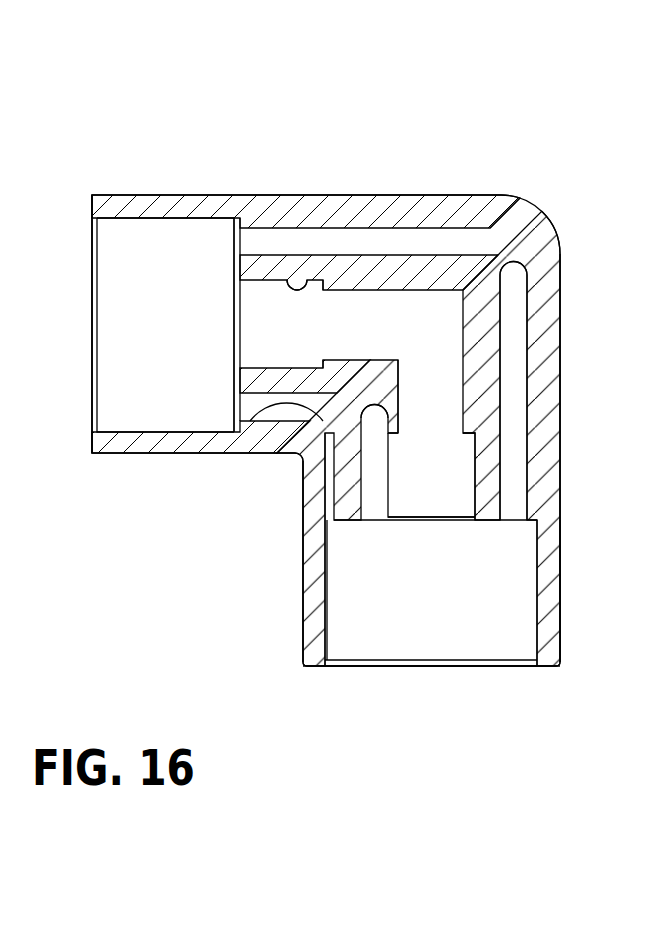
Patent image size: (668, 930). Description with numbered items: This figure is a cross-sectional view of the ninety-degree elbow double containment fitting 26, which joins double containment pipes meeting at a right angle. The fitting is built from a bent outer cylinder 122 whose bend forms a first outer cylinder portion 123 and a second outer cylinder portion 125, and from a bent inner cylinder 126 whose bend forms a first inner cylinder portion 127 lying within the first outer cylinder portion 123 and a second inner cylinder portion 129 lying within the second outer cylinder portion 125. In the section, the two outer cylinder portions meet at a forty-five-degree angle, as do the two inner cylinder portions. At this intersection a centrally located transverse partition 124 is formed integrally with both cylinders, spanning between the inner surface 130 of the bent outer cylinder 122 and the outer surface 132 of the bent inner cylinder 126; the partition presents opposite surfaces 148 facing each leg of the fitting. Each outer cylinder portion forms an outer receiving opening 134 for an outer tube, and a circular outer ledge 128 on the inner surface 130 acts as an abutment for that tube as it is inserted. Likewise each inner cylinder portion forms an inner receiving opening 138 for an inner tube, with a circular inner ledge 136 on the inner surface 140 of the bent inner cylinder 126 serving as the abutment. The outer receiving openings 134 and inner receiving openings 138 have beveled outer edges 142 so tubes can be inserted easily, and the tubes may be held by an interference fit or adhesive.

The 90° elbow double containment fitting 26 is at (594, 345).
The bent outer cylinder 122 is at (562, 553).
The first outer cylinder portion 123 is at (305, 181).
The centrally located transverse partition 124 is at (510, 240).
The second outer cylinder portion 125 is at (292, 634).
The bent inner cylinder 126 is at (272, 252).
The first inner cylinder portion 127 is at (405, 246).
The circular outer ledge 128 is at (222, 222).
The second inner cylinder portion 129 is at (570, 534).
The inner surface of the bent outer cylinder 130 is at (537, 620).
The outer surface of the bent inner cylinder 132 is at (510, 490).
The outer receiving opening 134 is at (124, 275).
The circular inner ledge 136 is at (272, 380).
The inner receiving opening 138 is at (246, 334).
The inner surface of the bent inner cylinder 140 is at (308, 283).
The beveled outer edge 142 is at (92, 220).
The opposite surface of the transverse partition 148 is at (456, 241).